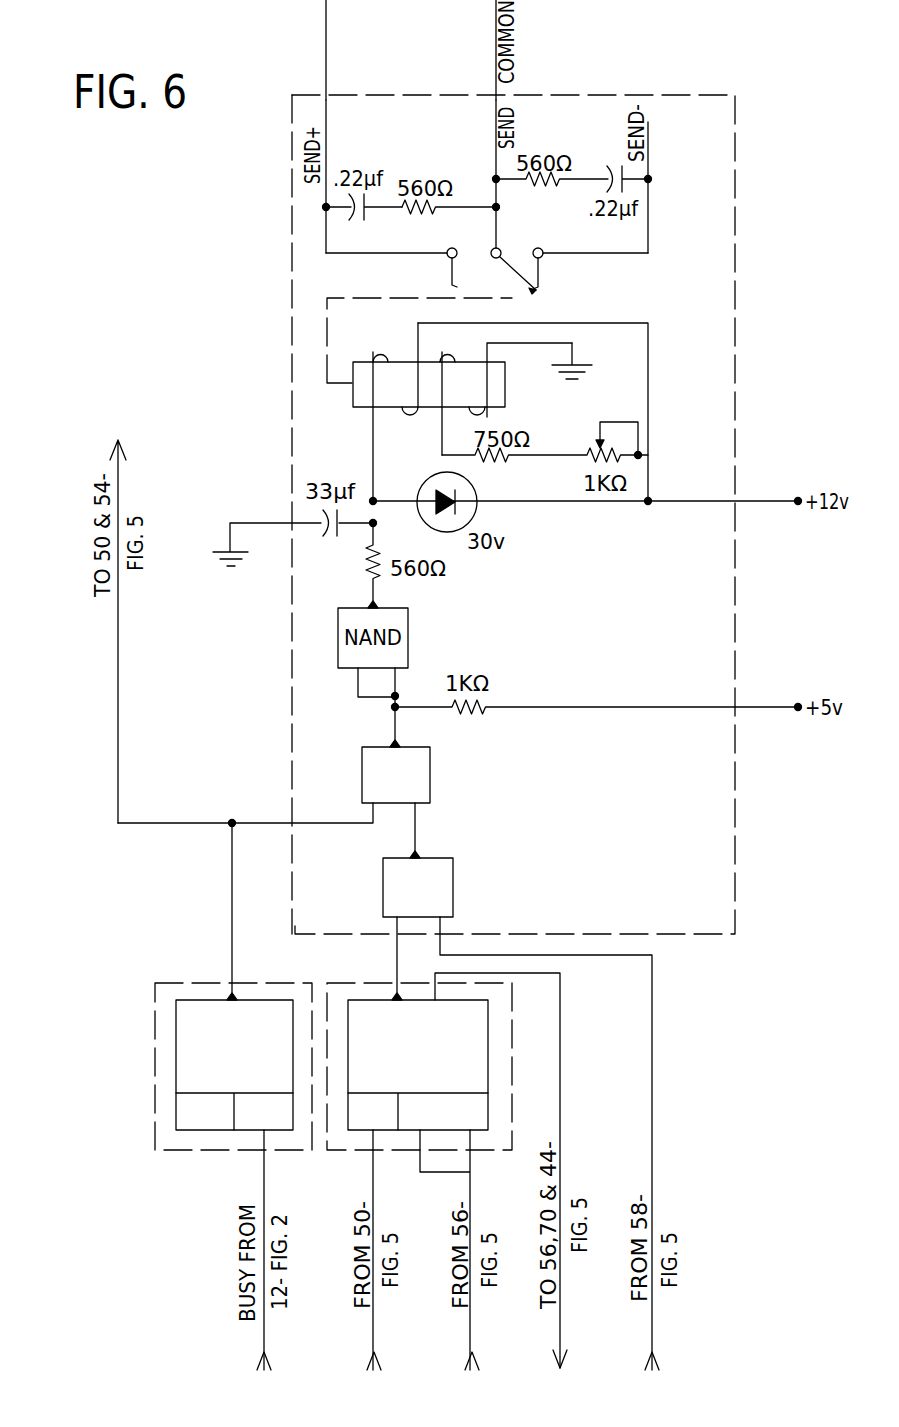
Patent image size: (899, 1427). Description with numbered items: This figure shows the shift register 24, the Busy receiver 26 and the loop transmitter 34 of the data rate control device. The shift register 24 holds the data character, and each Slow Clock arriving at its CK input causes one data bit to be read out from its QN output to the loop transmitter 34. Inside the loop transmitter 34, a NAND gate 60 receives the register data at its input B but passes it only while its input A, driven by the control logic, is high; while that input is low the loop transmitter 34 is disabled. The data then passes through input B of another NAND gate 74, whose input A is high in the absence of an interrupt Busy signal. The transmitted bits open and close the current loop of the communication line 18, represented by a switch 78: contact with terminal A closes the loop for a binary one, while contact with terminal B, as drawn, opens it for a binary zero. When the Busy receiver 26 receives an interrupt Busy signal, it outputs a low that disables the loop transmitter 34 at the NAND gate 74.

The communication line 18 is at (496, 37).
The loop transmitter 34 is at (736, 868).
The switch 78 is at (536, 292).
The NAND gate 74 is at (430, 780).
The NAND gate 60 is at (453, 893).
The Busy receiver 26 is at (155, 1055).
The shift register 24 is at (353, 983).